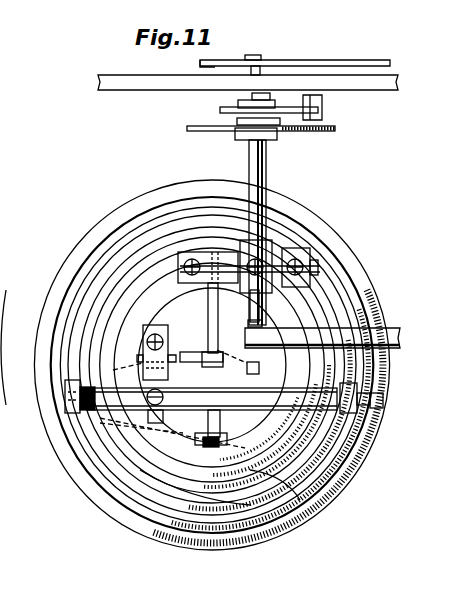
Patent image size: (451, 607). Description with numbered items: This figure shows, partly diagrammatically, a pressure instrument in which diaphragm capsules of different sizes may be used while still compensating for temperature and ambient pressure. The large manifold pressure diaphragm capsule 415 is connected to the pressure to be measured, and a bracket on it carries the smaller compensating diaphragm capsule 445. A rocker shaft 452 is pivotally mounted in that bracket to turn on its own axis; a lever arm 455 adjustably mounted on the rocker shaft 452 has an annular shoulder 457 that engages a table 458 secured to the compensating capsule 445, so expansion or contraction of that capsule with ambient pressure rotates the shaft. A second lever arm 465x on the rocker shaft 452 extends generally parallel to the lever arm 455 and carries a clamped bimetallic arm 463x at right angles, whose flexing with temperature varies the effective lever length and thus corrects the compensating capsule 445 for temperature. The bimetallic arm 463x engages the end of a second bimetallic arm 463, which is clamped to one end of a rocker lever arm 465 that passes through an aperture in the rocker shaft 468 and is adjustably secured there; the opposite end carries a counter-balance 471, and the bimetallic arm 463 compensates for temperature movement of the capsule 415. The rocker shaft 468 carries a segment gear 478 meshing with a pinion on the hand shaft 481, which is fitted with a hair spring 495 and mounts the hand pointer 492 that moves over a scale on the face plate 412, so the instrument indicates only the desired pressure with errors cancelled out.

The face plate 412 is at (115, 68).
The hand shaft 481 is at (262, 72).
The hand pointer 492 is at (306, 61).
The hair spring 495 is at (288, 107).
The segment gear 478 is at (187, 128).
The rocker shaft 468 is at (266, 165).
The counter-balance 471 is at (303, 243).
The rocker lever arm 465 is at (317, 262).
The bimetallic arm 463 is at (178, 282).
The bimetallic arm 463x is at (135, 300).
The manifold pressure diaphragm capsule 415 is at (158, 172).
The rocker shaft 452 is at (88, 398).
The lever arm 465x is at (115, 445).
The table 458 is at (135, 500).
The annular shoulder 457 is at (170, 505).
The compensating diaphragm capsule 445 is at (163, 510).
The lever arm 455 is at (300, 506).